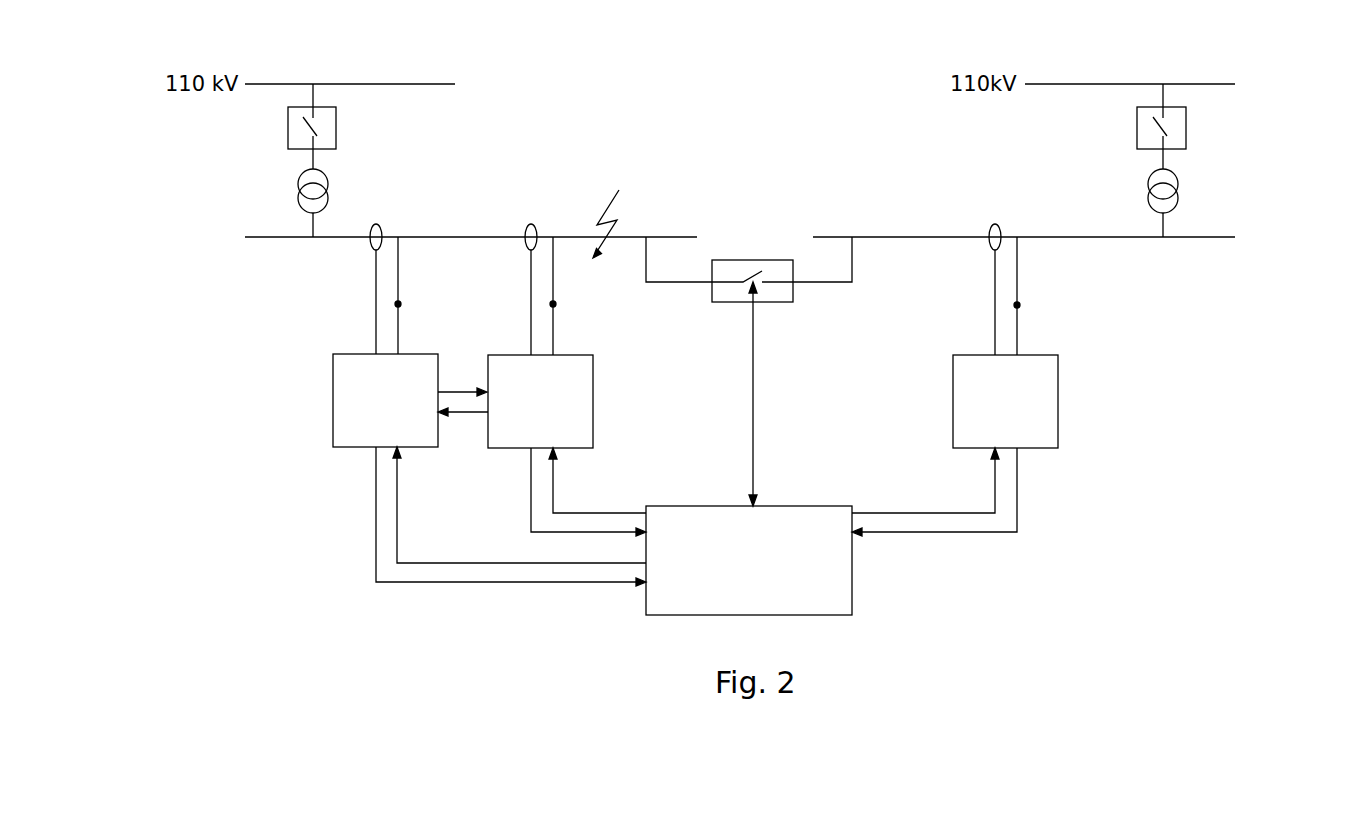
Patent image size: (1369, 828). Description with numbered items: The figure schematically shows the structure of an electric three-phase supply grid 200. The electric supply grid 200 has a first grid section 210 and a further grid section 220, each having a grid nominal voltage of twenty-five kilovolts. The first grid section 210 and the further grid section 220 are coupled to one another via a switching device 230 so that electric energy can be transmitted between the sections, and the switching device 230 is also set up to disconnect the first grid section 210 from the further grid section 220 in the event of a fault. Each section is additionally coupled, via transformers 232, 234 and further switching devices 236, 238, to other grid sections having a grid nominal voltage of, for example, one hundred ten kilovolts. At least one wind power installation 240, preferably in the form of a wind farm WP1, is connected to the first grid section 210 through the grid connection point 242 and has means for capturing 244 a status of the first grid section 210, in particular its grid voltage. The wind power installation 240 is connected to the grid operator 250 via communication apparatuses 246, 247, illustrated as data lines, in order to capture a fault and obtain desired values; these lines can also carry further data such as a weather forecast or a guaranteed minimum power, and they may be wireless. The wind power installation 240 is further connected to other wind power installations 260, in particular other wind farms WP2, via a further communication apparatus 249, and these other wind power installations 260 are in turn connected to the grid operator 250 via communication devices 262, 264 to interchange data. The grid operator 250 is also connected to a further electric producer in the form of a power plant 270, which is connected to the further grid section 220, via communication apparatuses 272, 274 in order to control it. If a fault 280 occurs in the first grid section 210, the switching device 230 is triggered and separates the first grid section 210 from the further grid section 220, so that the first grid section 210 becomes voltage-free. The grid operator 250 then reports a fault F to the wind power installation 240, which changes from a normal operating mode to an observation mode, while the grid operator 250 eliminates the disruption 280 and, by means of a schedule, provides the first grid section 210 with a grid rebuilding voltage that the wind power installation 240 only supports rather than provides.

The electric supply grid 200 is at (824, 124).
The first grid section 210 is at (265, 239).
The further grid section 220 is at (1213, 239).
The switching device 230 is at (778, 302).
The transformer 232 is at (328, 187).
The transformer 234 is at (1148, 200).
The further switching device 236 is at (336, 120).
The further switching device 238 is at (1137, 128).
The wind power installation 240 is at (333, 410).
The grid connection point 242 is at (398, 304).
The means for capturing 244 is at (376, 300).
The communication apparatus 246 is at (398, 540).
The communication apparatus 247 is at (376, 540).
The further communication apparatus 249 is at (473, 414).
The grid operator 250 is at (852, 580).
The other wind power installations 260 is at (593, 368).
The communication device 262 is at (554, 490).
The communication device 264 is at (531, 497).
The power plant 270 is at (1058, 398).
The communication apparatus 272 is at (1017, 493).
The communication apparatus 274 is at (993, 478).
The fault 280 is at (631, 206).